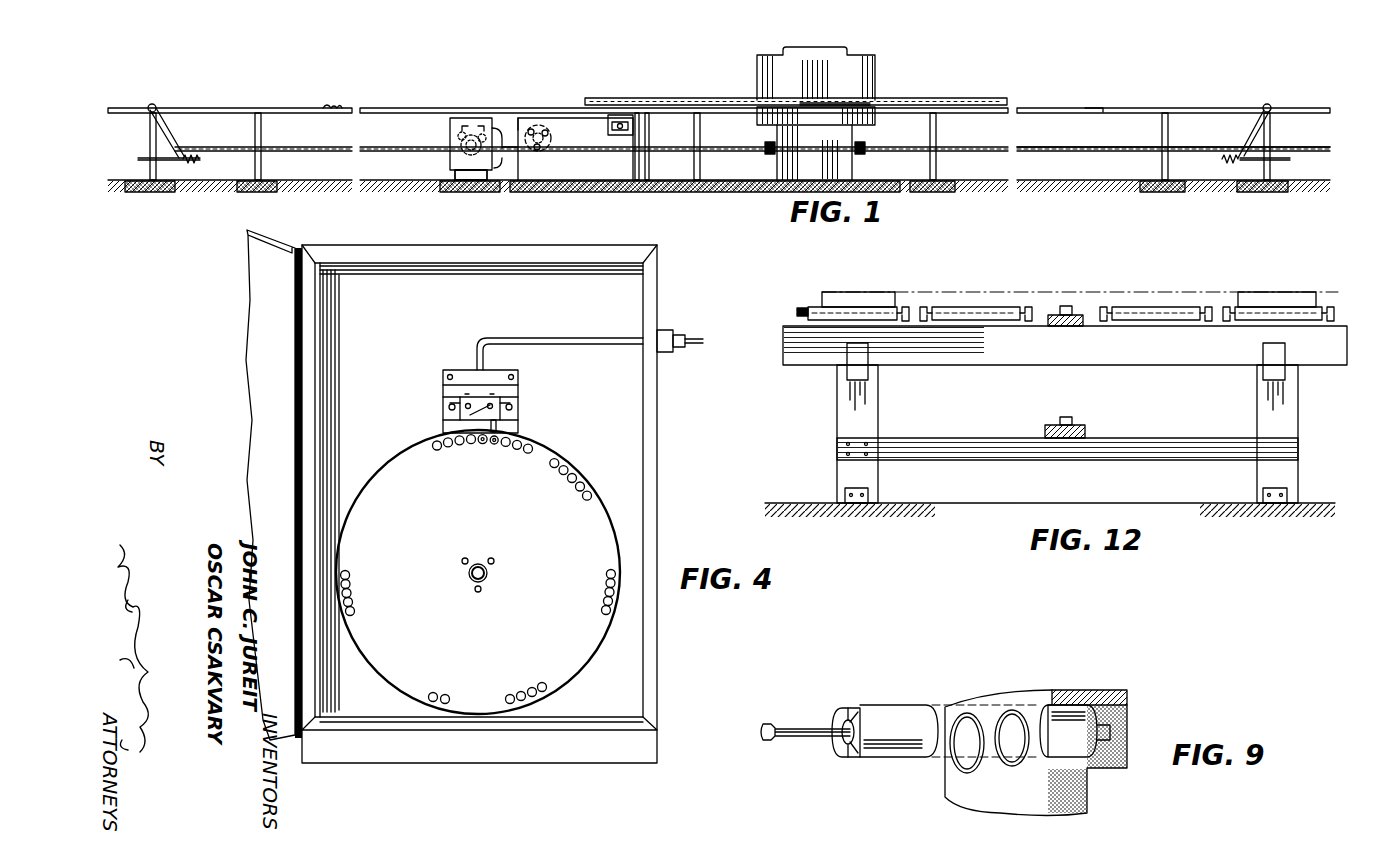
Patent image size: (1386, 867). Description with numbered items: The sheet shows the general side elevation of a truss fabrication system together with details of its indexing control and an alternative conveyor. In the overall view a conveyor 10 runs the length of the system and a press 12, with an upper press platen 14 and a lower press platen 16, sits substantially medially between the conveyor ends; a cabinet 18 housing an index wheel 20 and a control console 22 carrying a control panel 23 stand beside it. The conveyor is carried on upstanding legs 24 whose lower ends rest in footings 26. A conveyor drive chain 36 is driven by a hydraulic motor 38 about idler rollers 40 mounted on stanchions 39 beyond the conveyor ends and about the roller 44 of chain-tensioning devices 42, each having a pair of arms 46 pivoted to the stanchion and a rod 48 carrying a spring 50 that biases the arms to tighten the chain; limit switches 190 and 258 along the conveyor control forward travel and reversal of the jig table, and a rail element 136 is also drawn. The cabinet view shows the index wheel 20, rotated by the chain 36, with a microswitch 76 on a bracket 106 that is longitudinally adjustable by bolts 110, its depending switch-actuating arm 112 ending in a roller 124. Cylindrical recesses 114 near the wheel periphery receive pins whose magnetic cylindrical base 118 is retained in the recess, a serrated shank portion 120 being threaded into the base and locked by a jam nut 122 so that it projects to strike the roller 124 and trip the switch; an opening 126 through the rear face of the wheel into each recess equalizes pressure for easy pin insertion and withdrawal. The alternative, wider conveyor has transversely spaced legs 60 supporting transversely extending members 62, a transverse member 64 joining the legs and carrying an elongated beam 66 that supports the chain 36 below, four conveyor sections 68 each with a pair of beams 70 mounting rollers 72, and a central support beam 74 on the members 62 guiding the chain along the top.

In FIG. 1, the conveyor 10 is at (307, 86).
In FIG. 1, the press 12 is at (748, 61).
In FIG. 1, the upper press platen 14 is at (876, 104).
In FIG. 1, the lower press platen 16 is at (836, 106).
In FIG. 1, the cabinet 18 is at (437, 161).
In FIG. 4, the cabinet 18 is at (670, 305).
In FIG. 1, the index wheel 20 is at (484, 188).
In FIG. 4, the index wheel 20 is at (386, 442).
In FIG. 1, the control console 22 is at (573, 168).
In FIG. 1, the control panel 23 is at (622, 112).
In FIG. 1, the upstanding legs 24 is at (150, 138).
In FIG. 1, the footings 26 is at (153, 182).
In FIG. 1, the hydraulic motor 38 is at (543, 120).
In FIG. 1, the stanchions 39 is at (1278, 166).
In FIG. 1, the idler rollers 40 is at (149, 106).
In FIG. 1, the chain-tensioning devices 42 is at (176, 135).
In FIG. 1, the roller 44 is at (1242, 142).
In FIG. 1, the arms 46 is at (1255, 126).
In FIG. 1, the rod 48 is at (172, 162).
In FIG. 1, the spring 50 is at (201, 160).
In FIG. 1, the rail 136 is at (1050, 146).
In FIG. 1, the limit switches 190 is at (1093, 105).
In FIG. 1, the limit switches 258 is at (335, 105).
In FIG. 12, the conveyor drive chain 36 is at (1068, 416).
In FIG. 12, the legs 60 is at (837, 422).
In FIG. 12, the transversely extending members 62 is at (930, 358).
In FIG. 12, the transverse member 64 is at (1030, 460).
In FIG. 12, the elongated beam 66 is at (1047, 425).
In FIG. 12, the conveyor sections 68 is at (868, 300).
In FIG. 12, the beams 70 is at (797, 310).
In FIG. 12, the rollers 72 is at (835, 306).
In FIG. 12, the central support beam 74 is at (1080, 315).
In FIG. 4, the microswitch 76 is at (496, 402).
In FIG. 4, the bracket 106 is at (443, 383).
In FIG. 4, the bolts 110 is at (460, 410).
In FIG. 4, the switch-actuating arm 112 is at (498, 426).
In FIG. 4, the cylindrical recesses 114 is at (448, 449).
In FIG. 9, the cylindrical recesses 114 is at (1005, 712).
In FIG. 9, the cylindrical base 118 is at (905, 704).
In FIG. 4, the shank portion 120 is at (482, 446).
In FIG. 9, the shank portion 120 is at (801, 727).
In FIG. 9, the jam nut 122 is at (855, 706).
In FIG. 4, the roller 124 is at (500, 440).
In FIG. 9, the opening 126 is at (1112, 732).